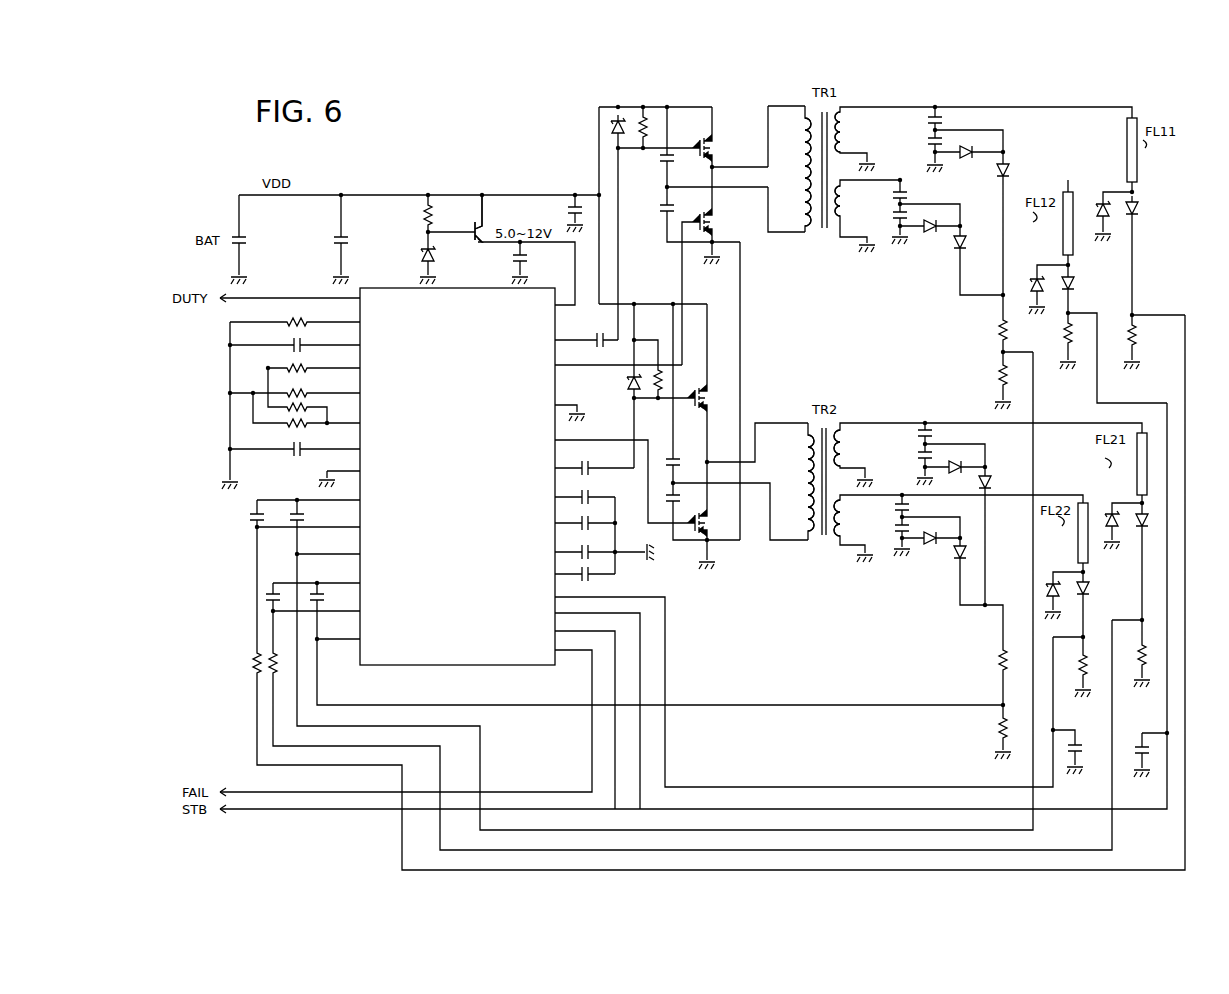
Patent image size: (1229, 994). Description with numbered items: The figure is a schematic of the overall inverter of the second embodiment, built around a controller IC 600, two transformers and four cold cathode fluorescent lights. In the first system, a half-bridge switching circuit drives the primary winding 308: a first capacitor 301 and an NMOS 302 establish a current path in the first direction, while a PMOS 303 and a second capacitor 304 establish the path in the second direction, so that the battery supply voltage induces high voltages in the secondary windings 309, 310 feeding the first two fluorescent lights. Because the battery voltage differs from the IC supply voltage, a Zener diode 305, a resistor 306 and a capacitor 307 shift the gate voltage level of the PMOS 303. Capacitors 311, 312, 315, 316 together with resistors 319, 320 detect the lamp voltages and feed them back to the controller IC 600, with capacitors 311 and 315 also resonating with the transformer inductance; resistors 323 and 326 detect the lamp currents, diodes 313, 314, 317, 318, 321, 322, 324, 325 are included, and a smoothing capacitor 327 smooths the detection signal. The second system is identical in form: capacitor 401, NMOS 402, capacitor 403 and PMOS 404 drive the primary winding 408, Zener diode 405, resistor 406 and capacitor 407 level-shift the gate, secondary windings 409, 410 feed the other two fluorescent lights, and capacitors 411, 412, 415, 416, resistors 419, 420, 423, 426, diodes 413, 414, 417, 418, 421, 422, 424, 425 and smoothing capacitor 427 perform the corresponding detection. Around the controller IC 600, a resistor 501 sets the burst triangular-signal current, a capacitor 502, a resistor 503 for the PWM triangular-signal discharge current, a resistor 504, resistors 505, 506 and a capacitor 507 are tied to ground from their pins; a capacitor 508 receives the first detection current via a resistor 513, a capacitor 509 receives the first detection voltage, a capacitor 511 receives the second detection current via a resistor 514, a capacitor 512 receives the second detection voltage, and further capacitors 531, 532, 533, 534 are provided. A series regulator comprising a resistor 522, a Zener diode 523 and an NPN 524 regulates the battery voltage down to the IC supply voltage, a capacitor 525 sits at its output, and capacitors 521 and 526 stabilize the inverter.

The first capacitor 301 is at (654, 167).
The NMOS 302 is at (716, 222).
The PMOS 303 is at (716, 148).
The second capacitor 304 is at (654, 212).
The Zener diode 305 is at (607, 134).
The resistor 306 is at (645, 122).
The capacitor 307 is at (590, 334).
The primary winding 308 is at (793, 172).
The secondary winding 309 is at (855, 132).
The secondary winding 310 is at (855, 201).
The capacitor 311 is at (919, 120).
The capacitor 312 is at (919, 141).
The diode 313 is at (964, 162).
The diode 314 is at (1019, 170).
The capacitor 315 is at (915, 194).
The capacitor 316 is at (890, 220).
The diode 317 is at (929, 234).
The diode 318 is at (973, 242).
The resistor 319 is at (988, 330).
The resistor 320 is at (988, 375).
The diode 321 is at (1094, 204).
The diode 322 is at (1147, 208).
The resistor 323 is at (1146, 335).
The diode 324 is at (1030, 278).
The diode 325 is at (1082, 283).
The resistor 326 is at (1052, 333).
The smoothing capacitor 327 is at (1130, 744).
The first capacitor 401 is at (683, 456).
The NMOS 402 is at (712, 394).
The second capacitor 403 is at (684, 500).
The PMOS 404 is at (712, 523).
The Zener diode 405 is at (620, 383).
The resistor 406 is at (665, 380).
The capacitor 407 is at (596, 462).
The primary winding 408 is at (795, 483).
The secondary winding 409 is at (854, 447).
The secondary winding 410 is at (854, 518).
The capacitor 411 is at (932, 434).
The capacitor 412 is at (911, 455).
The diode 413 is at (953, 477).
The diode 414 is at (1000, 482).
The capacitor 415 is at (917, 505).
The capacitor 416 is at (890, 532).
The diode 417 is at (930, 545).
The diode 418 is at (952, 560).
The resistor 419 is at (989, 660).
The resistor 420 is at (989, 728).
The diode 421 is at (1106, 514).
The diode 422 is at (1142, 534).
The resistor 423 is at (1152, 650).
The diode 424 is at (1048, 583).
The diode 425 is at (1098, 588).
The resistor 426 is at (1093, 658).
The smoothing capacitor 427 is at (1086, 742).
The resistor 501 is at (289, 314).
The capacitor 502 is at (287, 343).
The resistor 503 is at (307, 361).
The resistor 504 is at (307, 387).
The resistor 505 is at (312, 404).
The resistor 506 is at (312, 430).
The capacitor 507 is at (285, 443).
The capacitor 508 is at (238, 517).
The capacitor 509 is at (311, 517).
The capacitor 511 is at (272, 588).
The capacitor 512 is at (326, 590).
The resistor 513 is at (242, 663).
The resistor 514 is at (268, 676).
The capacitor 521 is at (325, 240).
The resistor 522 is at (412, 215).
The Zener diode 523 is at (412, 255).
The NPN 524 is at (471, 224).
The capacitor 525 is at (505, 258).
The capacitor 526 is at (559, 209).
The capacitor 531 is at (596, 492).
The capacitor 532 is at (596, 519).
The capacitor 533 is at (596, 548).
The capacitor 534 is at (596, 572).
The controller IC 600 is at (440, 667).